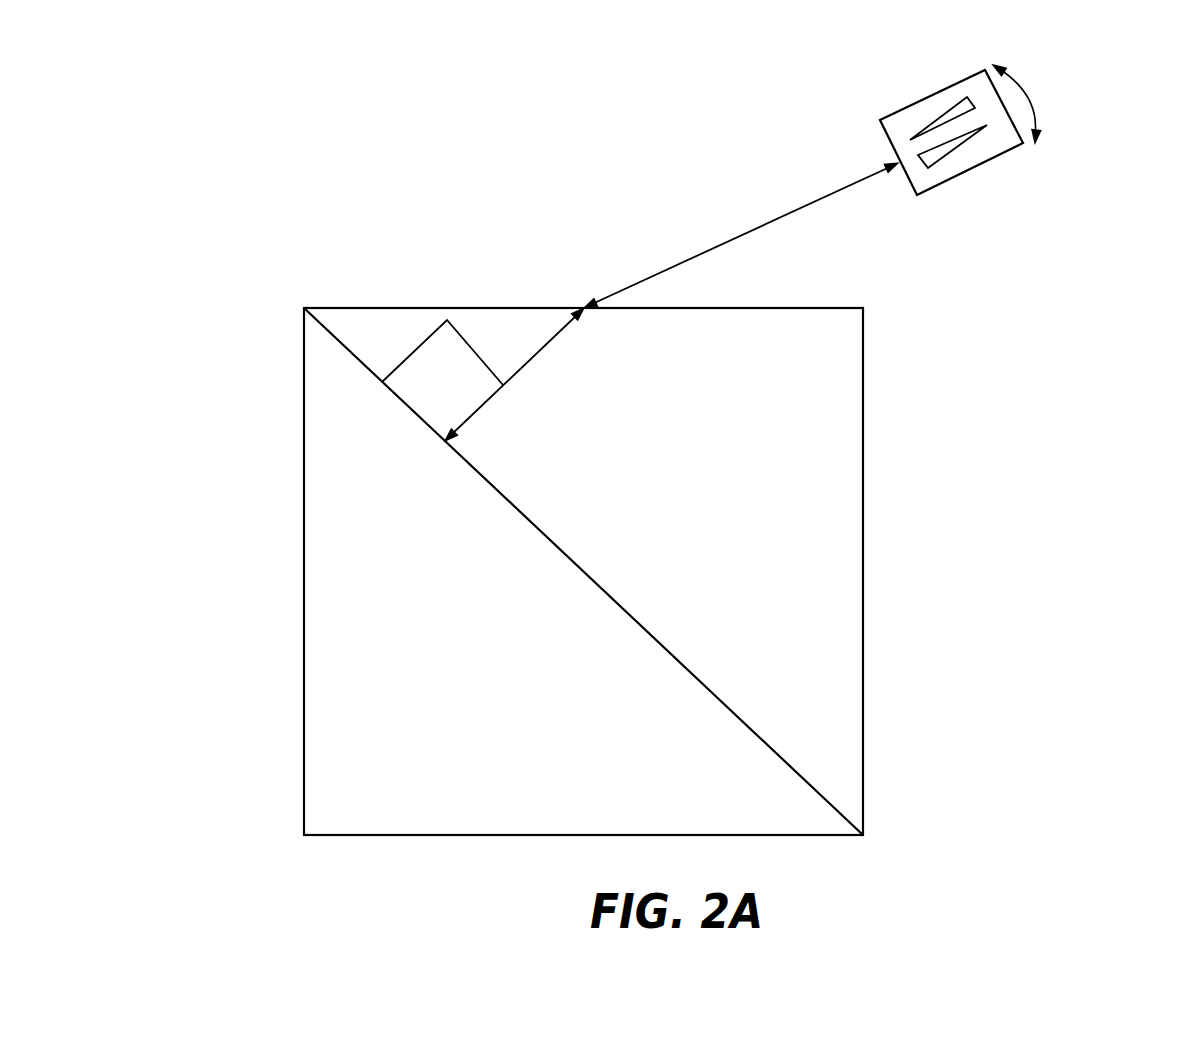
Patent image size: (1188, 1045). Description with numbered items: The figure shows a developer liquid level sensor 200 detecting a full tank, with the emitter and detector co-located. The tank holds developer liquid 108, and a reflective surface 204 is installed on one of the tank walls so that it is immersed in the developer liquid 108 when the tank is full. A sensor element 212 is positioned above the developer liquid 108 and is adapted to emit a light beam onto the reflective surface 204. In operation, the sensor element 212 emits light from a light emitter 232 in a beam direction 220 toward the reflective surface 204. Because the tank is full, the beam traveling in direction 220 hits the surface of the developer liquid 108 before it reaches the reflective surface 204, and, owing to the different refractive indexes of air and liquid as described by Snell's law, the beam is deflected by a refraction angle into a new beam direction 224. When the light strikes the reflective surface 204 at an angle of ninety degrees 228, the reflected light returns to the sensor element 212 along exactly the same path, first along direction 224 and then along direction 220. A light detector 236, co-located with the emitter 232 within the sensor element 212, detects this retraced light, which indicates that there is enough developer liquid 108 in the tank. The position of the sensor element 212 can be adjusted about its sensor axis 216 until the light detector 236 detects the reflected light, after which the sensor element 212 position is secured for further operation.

The developer liquid 108 is at (847, 433).
The developer liquid level sensor 200 is at (275, 685).
The reflective surface 204 is at (758, 738).
The sensor element 212 is at (993, 158).
The sensor axis 216 is at (1023, 93).
The light beam direction 220 is at (745, 232).
The new beam direction 224 is at (530, 360).
The angle of 90 degrees 228 is at (423, 340).
The light emitter 232 is at (957, 102).
The light detector 236 is at (920, 158).